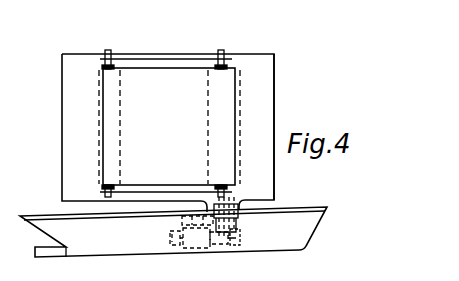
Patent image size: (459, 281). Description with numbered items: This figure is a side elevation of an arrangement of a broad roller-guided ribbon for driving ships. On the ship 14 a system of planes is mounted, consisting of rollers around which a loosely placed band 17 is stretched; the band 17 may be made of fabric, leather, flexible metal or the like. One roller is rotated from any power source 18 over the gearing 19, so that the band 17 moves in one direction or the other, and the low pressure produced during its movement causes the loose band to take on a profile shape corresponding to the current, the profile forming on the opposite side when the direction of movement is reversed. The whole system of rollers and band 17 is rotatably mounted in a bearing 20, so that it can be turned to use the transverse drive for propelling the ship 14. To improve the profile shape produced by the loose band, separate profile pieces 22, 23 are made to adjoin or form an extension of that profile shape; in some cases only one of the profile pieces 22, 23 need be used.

The ship 14 is at (133, 247).
The band 17 is at (162, 75).
The power source 18 is at (200, 242).
The gearing 19 is at (236, 245).
The bearing 20 is at (240, 205).
The separate profile piece 22 is at (69, 141).
The separate profile piece 23 is at (267, 117).